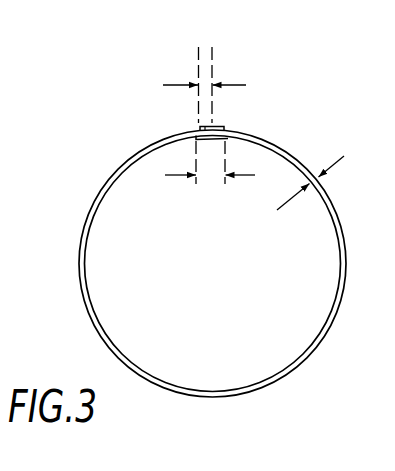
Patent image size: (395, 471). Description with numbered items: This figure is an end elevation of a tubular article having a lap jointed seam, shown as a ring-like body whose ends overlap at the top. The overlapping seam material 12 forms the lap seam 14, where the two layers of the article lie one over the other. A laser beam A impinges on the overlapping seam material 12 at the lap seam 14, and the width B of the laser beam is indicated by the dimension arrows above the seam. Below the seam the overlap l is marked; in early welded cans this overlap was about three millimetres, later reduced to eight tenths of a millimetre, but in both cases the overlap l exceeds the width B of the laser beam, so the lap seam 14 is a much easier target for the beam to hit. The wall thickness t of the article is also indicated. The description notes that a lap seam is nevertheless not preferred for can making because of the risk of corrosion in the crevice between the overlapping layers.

The overlapping seam material 12 is at (125, 166).
The lap seam 14 is at (227, 127).
The laser beam A is at (205, 73).
The width of the laser beam B is at (196, 69).
The overlap l is at (210, 166).
The ring thickness t is at (310, 177).